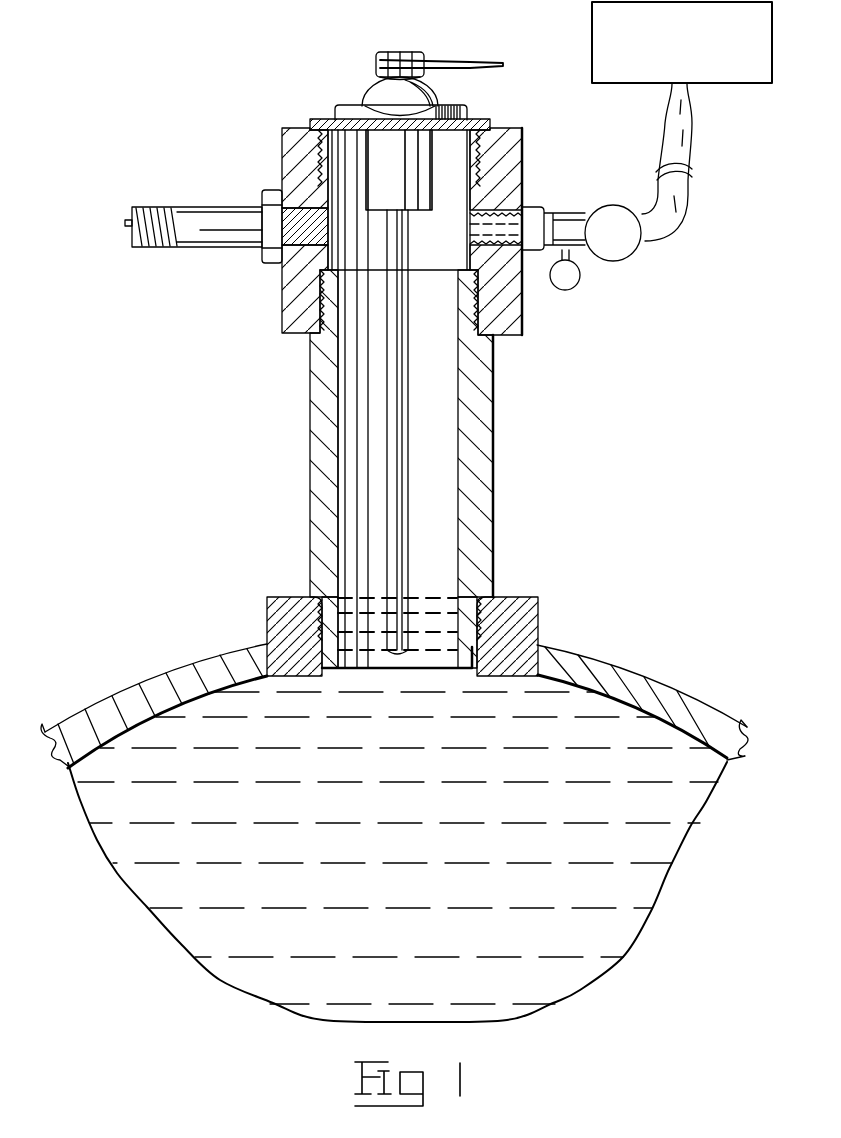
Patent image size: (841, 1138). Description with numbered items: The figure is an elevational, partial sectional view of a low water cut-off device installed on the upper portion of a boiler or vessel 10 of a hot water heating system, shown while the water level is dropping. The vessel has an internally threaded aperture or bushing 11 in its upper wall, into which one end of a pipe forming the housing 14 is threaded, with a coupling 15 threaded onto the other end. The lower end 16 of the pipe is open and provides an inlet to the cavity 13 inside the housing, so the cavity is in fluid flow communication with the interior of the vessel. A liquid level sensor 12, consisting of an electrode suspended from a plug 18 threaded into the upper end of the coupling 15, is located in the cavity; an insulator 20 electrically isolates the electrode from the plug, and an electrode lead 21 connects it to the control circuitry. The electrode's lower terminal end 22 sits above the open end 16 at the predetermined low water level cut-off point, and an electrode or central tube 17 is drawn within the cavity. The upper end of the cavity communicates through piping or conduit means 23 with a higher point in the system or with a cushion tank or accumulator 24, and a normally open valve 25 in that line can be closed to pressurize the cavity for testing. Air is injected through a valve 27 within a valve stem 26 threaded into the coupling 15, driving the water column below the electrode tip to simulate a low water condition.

The boiler or vessel 10 is at (653, 693).
The internally threaded aperture or bushing 11 is at (500, 593).
The liquid level sensor 12 is at (396, 482).
The cavity 13 is at (430, 400).
The housing 14 is at (470, 372).
The coupling 15 is at (510, 166).
The lower end of the pipe 16 is at (537, 670).
The tube 17 is at (398, 435).
The plug 18 is at (503, 146).
The insulator 20 is at (366, 98).
The electrode lead 21 is at (443, 53).
The lower terminal end 22 is at (393, 648).
The piping or conduit means 23 is at (688, 204).
The cushion tank or accumulator 24 is at (592, 16).
The normally open valve 25 is at (632, 256).
The valve stem 26 is at (236, 210).
The valve 27 is at (125, 224).